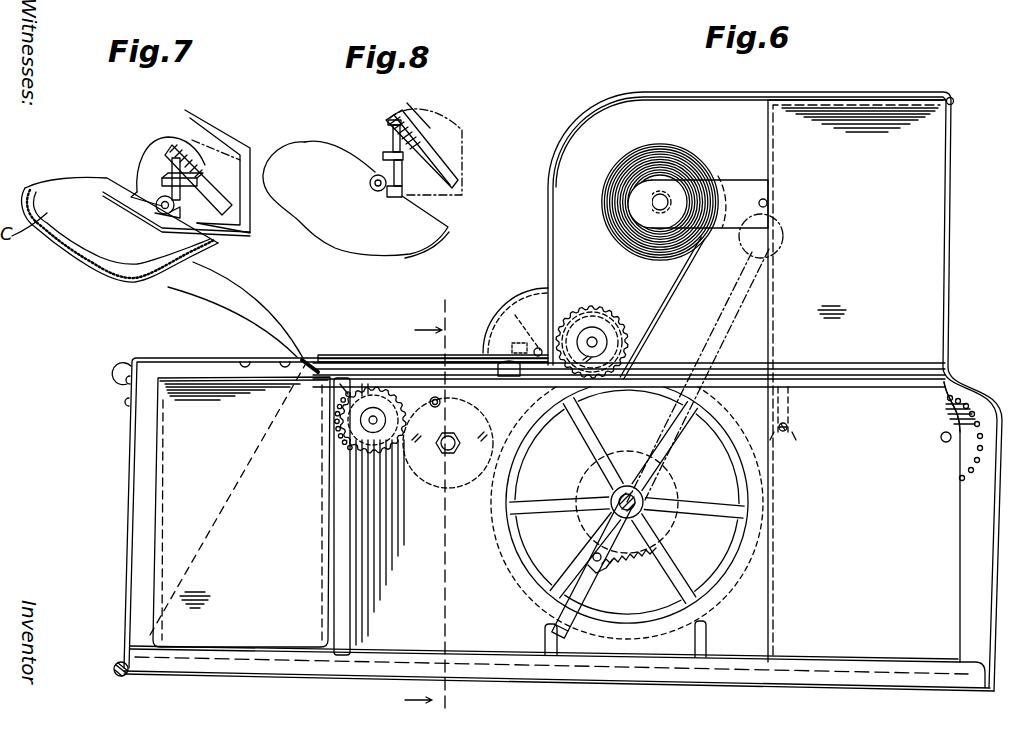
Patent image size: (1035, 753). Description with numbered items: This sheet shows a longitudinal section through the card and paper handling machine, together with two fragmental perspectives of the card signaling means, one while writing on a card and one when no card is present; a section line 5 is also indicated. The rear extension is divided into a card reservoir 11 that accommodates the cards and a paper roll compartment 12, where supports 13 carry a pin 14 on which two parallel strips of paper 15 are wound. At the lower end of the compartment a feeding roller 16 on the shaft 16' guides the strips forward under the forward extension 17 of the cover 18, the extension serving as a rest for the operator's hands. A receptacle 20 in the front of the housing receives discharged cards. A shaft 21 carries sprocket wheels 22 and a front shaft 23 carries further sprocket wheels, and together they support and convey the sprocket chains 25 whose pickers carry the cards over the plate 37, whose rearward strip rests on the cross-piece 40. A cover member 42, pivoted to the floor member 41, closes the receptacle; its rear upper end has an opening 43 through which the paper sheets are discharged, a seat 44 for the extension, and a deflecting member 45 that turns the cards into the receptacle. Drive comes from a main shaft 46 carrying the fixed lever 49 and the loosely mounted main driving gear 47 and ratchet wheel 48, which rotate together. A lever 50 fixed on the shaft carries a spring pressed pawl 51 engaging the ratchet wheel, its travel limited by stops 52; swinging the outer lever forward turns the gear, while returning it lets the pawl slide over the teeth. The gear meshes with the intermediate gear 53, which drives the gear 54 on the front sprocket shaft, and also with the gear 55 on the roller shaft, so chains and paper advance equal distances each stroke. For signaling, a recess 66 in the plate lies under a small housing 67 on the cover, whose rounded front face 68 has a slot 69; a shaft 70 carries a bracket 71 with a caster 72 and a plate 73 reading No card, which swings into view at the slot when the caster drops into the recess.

In FIG. 6, the section line 5- 5 is at (431, 507).
In FIG. 6, the card reservoir 11 is at (857, 381).
In FIG. 6, the paper roll compartment 12 is at (775, 391).
In FIG. 6, the supports 13 is at (738, 188).
In FIG. 6, the pin 14 is at (668, 202).
In FIG. 6, the strips of paper 15 is at (684, 292).
In FIG. 6, the feeding roller 16 is at (592, 323).
In FIG. 6, the shaft 16' is at (630, 348).
In FIG. 6, the forward extension 17 is at (360, 356).
In FIG. 6, the cover 18 is at (607, 112).
In FIG. 6, the receptacle 20 is at (240, 506).
In FIG. 6, the shaft 21 is at (943, 441).
In FIG. 6, the sprocket wheels 22 is at (978, 400).
In FIG. 6, the shaft 23 is at (365, 425).
In FIG. 6, the sprocket chains 25 is at (352, 438).
In FIG. 7, the plate 37 is at (72, 257).
In FIG. 8, the plate 37 is at (356, 199).
In FIG. 6, the cross-piece 40 is at (786, 418).
In FIG. 6, the floor member 41 is at (134, 678).
In FIG. 6, the cover member 42 is at (128, 466).
In FIG. 6, the opening 43 is at (290, 357).
In FIG. 6, the seat 44 is at (310, 362).
In FIG. 6, the deflecting member 45 is at (313, 368).
In FIG. 6, the main shaft 46 is at (614, 503).
In FIG. 6, the main driving gear 47 is at (752, 544).
In FIG. 6, the ratchet wheel 48 is at (652, 512).
In FIG. 6, the lever 49 is at (672, 448).
In FIG. 6, the lever 50 is at (556, 610).
In FIG. 6, the spring pressed pawl 51 is at (618, 564).
In FIG. 6, the stops 52 is at (545, 640).
In FIG. 6, the intermediate gear 53 is at (444, 480).
In FIG. 6, the gear 54 is at (366, 446).
In FIG. 6, the gear 55 is at (614, 322).
In FIG. 8, the recess 66 is at (393, 200).
In FIG. 6, the small housing 67 is at (490, 313).
In FIG. 7, the small housing 67 is at (234, 162).
In FIG. 7, the rounded front face 68 is at (142, 166).
In FIG. 7, the slot 69 is at (166, 152).
In FIG. 8, the slot 69 is at (395, 122).
In FIG. 8, the shaft 70 is at (457, 184).
In FIG. 8, the bracket 71 is at (372, 178).
In FIG. 7, the caster 72 is at (154, 211).
In FIG. 8, the caster 72 is at (376, 192).
In FIG. 7, the plate 73 is at (188, 150).
In FIG. 8, the plate 73 is at (373, 147).